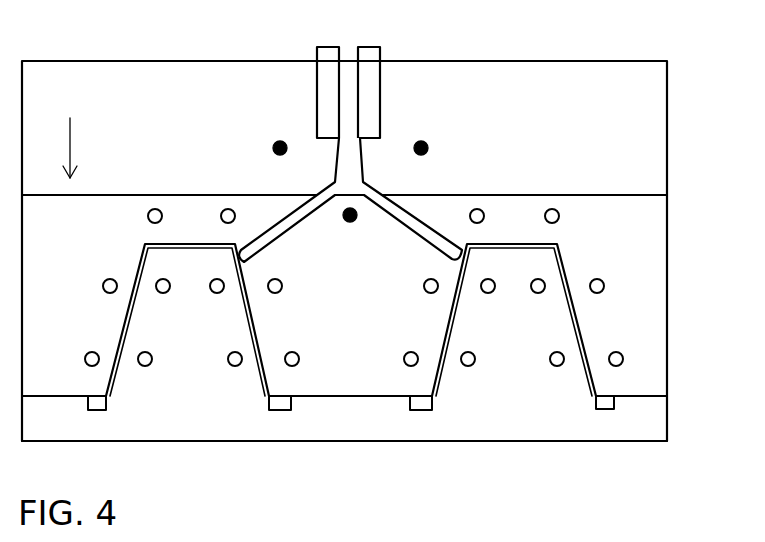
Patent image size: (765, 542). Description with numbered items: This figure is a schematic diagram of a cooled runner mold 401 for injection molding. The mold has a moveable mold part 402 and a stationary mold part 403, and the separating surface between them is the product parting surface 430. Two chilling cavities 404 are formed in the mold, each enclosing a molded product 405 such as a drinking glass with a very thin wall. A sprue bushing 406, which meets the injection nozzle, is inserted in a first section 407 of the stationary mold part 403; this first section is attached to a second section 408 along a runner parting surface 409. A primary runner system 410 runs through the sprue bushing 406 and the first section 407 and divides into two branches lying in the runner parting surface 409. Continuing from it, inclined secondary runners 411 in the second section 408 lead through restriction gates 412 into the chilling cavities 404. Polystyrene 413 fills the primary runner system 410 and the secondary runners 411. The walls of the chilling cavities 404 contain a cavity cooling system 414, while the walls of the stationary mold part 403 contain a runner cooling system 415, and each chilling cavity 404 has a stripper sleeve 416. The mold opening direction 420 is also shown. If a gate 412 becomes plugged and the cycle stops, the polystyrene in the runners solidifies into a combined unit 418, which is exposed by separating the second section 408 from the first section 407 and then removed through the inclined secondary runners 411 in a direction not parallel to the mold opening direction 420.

The cooled runner mold 401 is at (701, 386).
The moveable mold part 402 is at (667, 423).
The stationary mold part 403 is at (379, 192).
The chilling cavity 404 is at (562, 257).
The molded product 405 is at (573, 317).
The sprue bushing 406 is at (368, 58).
The first section of the stationary mold part 407 is at (667, 107).
The second section of the stationary mold part 408 is at (667, 260).
The runner parting surface 409 is at (577, 193).
The primary runner system 410 is at (364, 174).
The inclined secondary runners 411 is at (403, 203).
The restriction gate 412 is at (450, 258).
The polystyrene 413 is at (348, 72).
The cavity cooling system 414 is at (552, 364).
The runner cooling system 415 is at (343, 212).
The stripper sleeve 416 is at (603, 409).
The combined unit 418 is at (349, 176).
The mold opening direction 420 is at (89, 142).
The product parting surface 430 is at (353, 396).